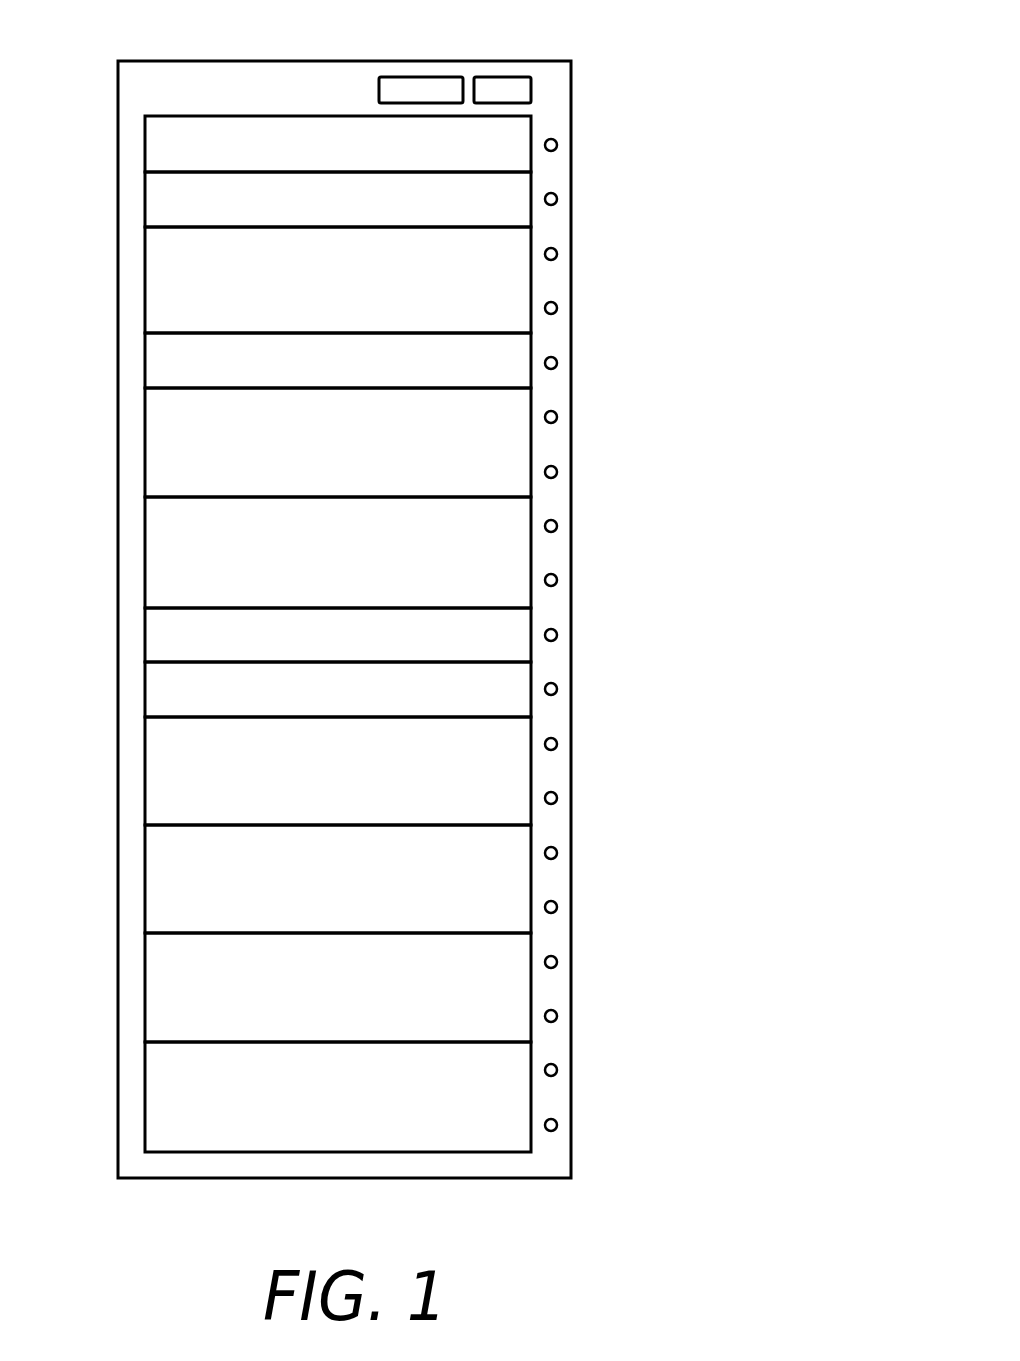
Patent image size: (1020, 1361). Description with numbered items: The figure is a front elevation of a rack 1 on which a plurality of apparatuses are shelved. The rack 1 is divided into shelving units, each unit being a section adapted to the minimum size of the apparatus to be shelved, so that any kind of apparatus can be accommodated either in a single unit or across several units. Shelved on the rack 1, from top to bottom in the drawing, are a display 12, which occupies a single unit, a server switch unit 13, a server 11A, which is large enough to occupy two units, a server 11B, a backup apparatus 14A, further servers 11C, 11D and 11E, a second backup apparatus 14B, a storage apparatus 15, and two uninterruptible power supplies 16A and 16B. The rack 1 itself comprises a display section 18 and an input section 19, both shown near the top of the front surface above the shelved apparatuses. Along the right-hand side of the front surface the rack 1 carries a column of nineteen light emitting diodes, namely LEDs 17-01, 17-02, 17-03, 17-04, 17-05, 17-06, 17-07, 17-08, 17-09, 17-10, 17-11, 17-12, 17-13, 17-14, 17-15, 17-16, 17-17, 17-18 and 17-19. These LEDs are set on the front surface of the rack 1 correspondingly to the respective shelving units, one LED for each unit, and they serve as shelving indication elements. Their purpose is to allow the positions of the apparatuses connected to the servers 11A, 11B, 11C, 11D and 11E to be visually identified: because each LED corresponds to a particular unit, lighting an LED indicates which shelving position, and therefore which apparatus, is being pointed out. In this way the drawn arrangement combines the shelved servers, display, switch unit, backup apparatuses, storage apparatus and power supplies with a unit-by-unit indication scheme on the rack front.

The rack 1 is at (560, 61).
The server 11A is at (145, 280).
The server 11B is at (145, 362).
The server 11C is at (145, 552).
The server 11D is at (145, 633).
The server 11E is at (145, 688).
The display 12 is at (145, 143).
The server switch unit 13 is at (145, 197).
The backup apparatus 14A is at (145, 443).
The backup apparatus 14B is at (145, 770).
The storage apparatus 15 is at (145, 877).
The uninterruptible power supply 16A is at (145, 988).
The uninterruptible power supply 16B is at (145, 1097).
The LED 17-01 is at (557, 145).
The LED 17-02 is at (557, 199).
The LED 17-03 is at (557, 254).
The LED 17-04 is at (557, 308).
The LED 17-05 is at (557, 363).
The LED 17-06 is at (557, 417).
The LED 17-07 is at (557, 472).
The LED 17-08 is at (557, 526).
The LED 17-09 is at (557, 580).
The LED 17-10 is at (557, 635).
The LED 17-11 is at (557, 689).
The LED 17-12 is at (557, 744).
The LED 17-13 is at (557, 798).
The LED 17-14 is at (557, 853).
The LED 17-15 is at (557, 907).
The LED 17-16 is at (557, 962).
The LED 17-17 is at (557, 1016).
The LED 17-18 is at (557, 1070).
The LED 17-19 is at (557, 1125).
The display section 18 is at (420, 77).
The input section 19 is at (501, 77).